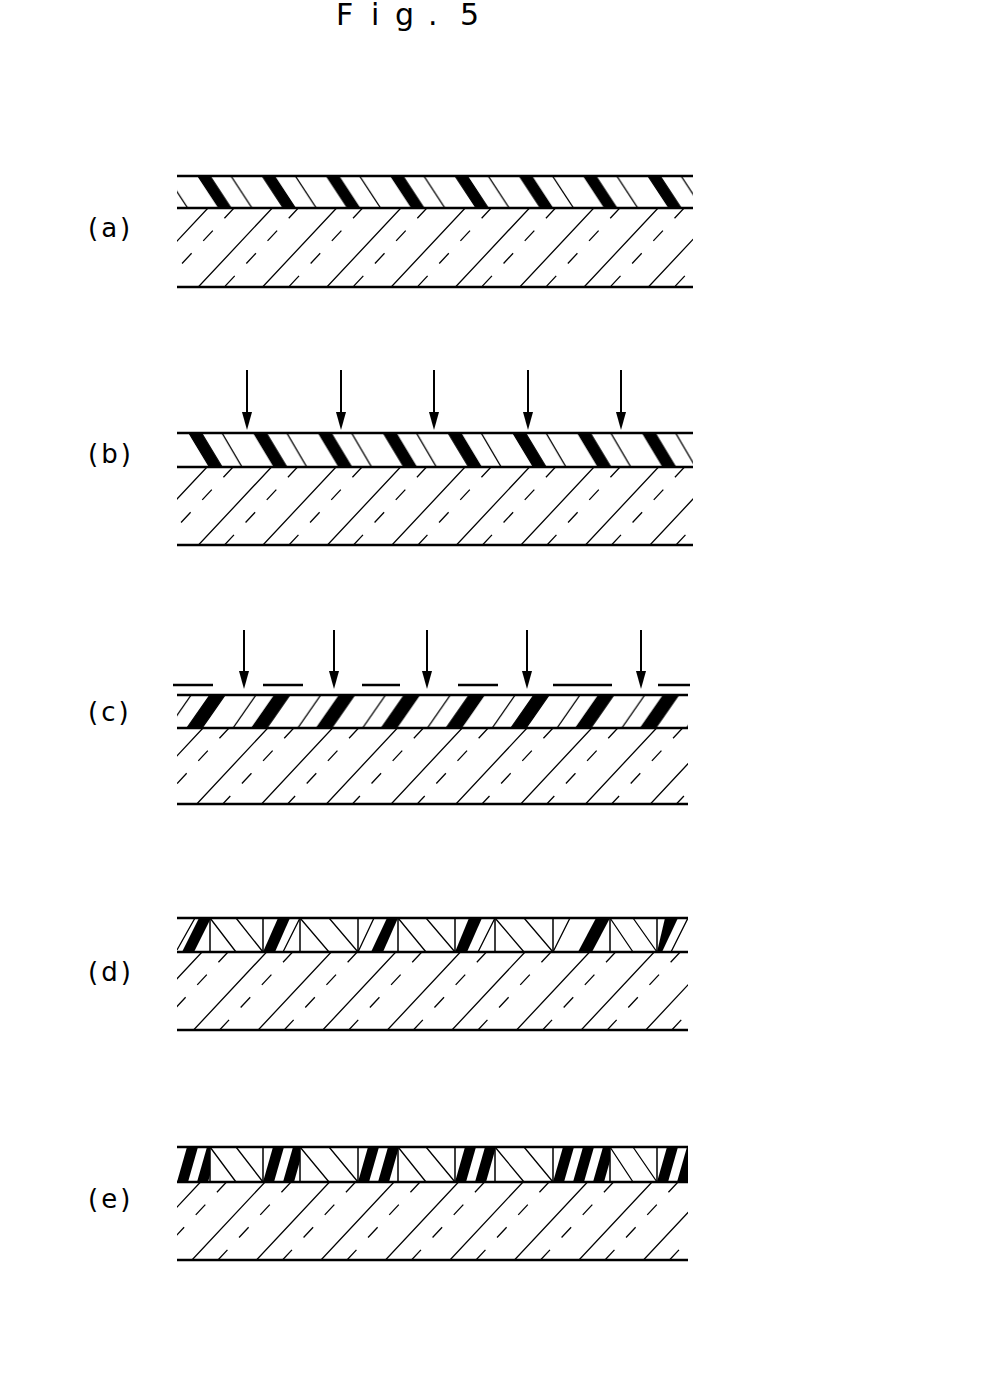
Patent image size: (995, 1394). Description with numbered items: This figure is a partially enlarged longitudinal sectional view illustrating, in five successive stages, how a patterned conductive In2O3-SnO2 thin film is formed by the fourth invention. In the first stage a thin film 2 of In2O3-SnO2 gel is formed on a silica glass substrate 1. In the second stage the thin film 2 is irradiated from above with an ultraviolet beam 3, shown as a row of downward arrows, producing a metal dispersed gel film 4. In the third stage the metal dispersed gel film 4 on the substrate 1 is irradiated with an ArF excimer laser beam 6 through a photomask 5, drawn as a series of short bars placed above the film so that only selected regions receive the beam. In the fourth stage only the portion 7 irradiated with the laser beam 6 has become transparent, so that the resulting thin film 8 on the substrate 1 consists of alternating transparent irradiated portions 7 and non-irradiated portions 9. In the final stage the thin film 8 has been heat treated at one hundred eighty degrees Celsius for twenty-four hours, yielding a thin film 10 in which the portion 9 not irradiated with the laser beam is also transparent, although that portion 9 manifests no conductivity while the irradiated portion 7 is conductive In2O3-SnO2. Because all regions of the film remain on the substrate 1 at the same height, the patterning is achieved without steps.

The silica glass substrate 1 is at (442, 281).
The thin film of In2O3-SnO2 gel 2 is at (433, 188).
The ultraviolet beam 3 is at (622, 392).
The metal dispersed gel film 4 is at (676, 715).
The photomask 5 is at (582, 684).
The ArF excimer laser beam 6 is at (645, 657).
The portion irradiated with the laser beam 7 is at (523, 932).
The thin film 8 is at (680, 940).
The portion not irradiated with the laser beam 9 is at (578, 1152).
The thin film 10 is at (690, 1160).